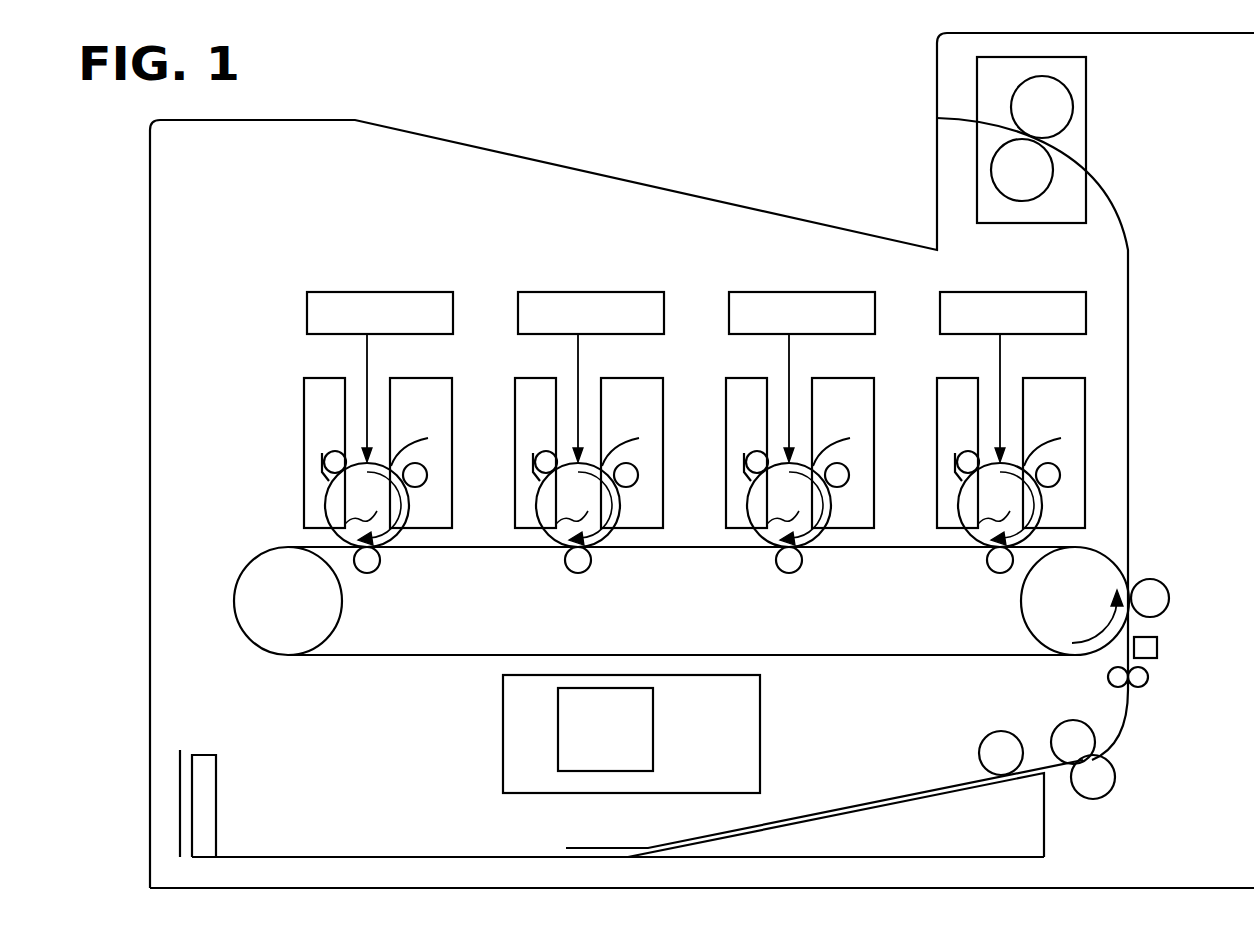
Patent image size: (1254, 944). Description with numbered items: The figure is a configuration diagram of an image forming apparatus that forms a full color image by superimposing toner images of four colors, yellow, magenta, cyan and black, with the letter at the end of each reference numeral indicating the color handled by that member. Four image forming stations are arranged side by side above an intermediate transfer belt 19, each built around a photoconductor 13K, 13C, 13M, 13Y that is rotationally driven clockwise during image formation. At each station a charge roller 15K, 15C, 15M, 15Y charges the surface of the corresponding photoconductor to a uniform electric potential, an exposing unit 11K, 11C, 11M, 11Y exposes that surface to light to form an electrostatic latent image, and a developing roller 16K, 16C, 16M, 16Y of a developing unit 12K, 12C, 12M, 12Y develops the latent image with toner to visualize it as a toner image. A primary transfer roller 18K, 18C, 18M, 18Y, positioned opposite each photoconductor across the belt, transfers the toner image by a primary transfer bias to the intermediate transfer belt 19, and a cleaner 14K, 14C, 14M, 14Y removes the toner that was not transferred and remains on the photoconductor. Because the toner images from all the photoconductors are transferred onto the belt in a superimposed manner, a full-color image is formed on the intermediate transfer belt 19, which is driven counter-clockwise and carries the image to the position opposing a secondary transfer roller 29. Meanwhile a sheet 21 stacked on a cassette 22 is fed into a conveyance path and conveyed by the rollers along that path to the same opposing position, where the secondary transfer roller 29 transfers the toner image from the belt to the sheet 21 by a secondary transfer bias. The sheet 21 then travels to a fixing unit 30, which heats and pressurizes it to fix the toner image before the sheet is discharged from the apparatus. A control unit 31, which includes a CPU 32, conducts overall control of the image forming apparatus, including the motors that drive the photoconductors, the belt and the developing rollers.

The exposing unit 11K is at (422, 292).
The exposing unit 11C is at (633, 292).
The exposing unit 11M is at (844, 292).
The exposing unit 11Y is at (1055, 292).
The developing unit 12K is at (407, 378).
The developing unit 12C is at (618, 378).
The developing unit 12M is at (829, 378).
The developing unit 12Y is at (1040, 378).
The photoconductor 13K is at (314, 508).
The photoconductor 13C is at (537, 508).
The photoconductor 13M is at (748, 508).
The photoconductor 13Y is at (960, 508).
The cleaner 14K is at (314, 460).
The cleaner 14C is at (537, 460).
The cleaner 14M is at (748, 460).
The cleaner 14Y is at (960, 460).
The charge roller 15K is at (318, 456).
The charge roller 15C is at (541, 456).
The charge roller 15M is at (752, 456).
The charge roller 15Y is at (964, 456).
The developing roller 16K is at (420, 463).
The developing roller 16C is at (631, 463).
The developing roller 16M is at (842, 463).
The developing roller 16Y is at (1053, 463).
The primary transfer roller 18K is at (370, 573).
The primary transfer roller 18C is at (578, 573).
The primary transfer roller 18M is at (789, 573).
The primary transfer roller 18Y is at (1000, 573).
The intermediate transfer belt 19 is at (380, 657).
The sheet 21 is at (800, 820).
The cassette 22 is at (1042, 837).
The secondary transfer roller 29 is at (1172, 602).
The fixing unit 30 is at (1087, 105).
The control unit 31 is at (503, 720).
The CPU 32 is at (653, 700).